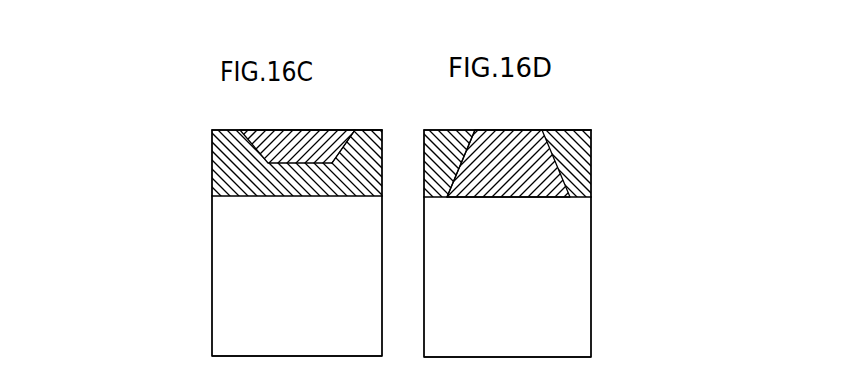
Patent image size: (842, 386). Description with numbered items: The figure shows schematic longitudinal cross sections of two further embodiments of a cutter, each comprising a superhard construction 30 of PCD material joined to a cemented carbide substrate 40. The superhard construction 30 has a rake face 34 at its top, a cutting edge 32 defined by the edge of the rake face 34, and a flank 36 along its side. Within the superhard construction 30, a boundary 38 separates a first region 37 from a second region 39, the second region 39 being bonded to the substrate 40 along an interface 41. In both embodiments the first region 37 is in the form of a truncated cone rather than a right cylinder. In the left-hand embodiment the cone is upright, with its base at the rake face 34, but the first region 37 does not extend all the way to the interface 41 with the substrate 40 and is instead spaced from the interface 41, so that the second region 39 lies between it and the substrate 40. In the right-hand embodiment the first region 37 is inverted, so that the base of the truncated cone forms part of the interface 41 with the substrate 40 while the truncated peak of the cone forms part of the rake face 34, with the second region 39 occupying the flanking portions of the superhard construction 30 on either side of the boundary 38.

In FIG. 16C, the superhard construction 30 is at (159, 109).
In FIG. 16D, the superhard construction 30 is at (625, 60).
In FIG. 16C, the cutting edge 32 is at (382, 130).
In FIG. 16D, the cutting edge 32 is at (592, 131).
In FIG. 16C, the rake face 34 is at (367, 128).
In FIG. 16D, the rake face 34 is at (485, 130).
In FIG. 16C, the flank 36 is at (383, 156).
In FIG. 16D, the flank 36 is at (591, 180).
In FIG. 16C, the first region 37 is at (254, 130).
In FIG. 16D, the first region 37 is at (528, 133).
In FIG. 16C, the boundary 38 is at (262, 138).
In FIG. 16D, the boundary 38 is at (557, 166).
In FIG. 16C, the second region 39 is at (212, 178).
In FIG. 16D, the second region 39 is at (440, 173).
In FIG. 16C, the cemented carbide substrate 40 is at (228, 298).
In FIG. 16D, the cemented carbide substrate 40 is at (574, 268).
In FIG. 16C, the interface 41 is at (226, 197).
In FIG. 16D, the interface 41 is at (578, 197).